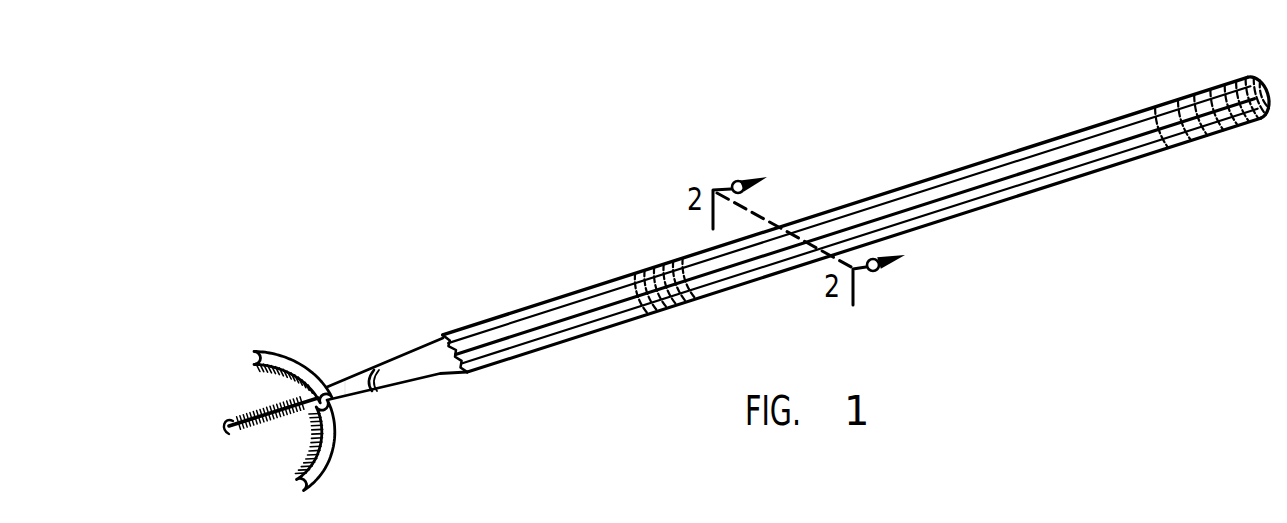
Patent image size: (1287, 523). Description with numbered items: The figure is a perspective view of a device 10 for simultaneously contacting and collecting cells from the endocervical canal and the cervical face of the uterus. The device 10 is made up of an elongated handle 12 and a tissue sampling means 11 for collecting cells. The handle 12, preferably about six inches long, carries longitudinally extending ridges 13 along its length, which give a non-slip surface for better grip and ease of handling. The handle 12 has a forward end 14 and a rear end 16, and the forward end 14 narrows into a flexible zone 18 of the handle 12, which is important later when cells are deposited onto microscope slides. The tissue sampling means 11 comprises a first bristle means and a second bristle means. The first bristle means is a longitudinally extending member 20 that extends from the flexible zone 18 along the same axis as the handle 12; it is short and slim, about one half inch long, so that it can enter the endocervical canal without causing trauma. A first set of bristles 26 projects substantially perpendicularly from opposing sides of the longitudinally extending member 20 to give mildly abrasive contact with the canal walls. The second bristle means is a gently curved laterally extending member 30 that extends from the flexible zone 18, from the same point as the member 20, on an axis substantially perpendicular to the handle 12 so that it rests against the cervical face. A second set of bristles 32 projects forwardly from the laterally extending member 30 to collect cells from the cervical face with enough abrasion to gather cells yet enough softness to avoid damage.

The device 10 is at (903, 158).
The tissue sampling means 11 is at (236, 330).
The elongated handle 12 is at (710, 294).
The longitudinally extending ridges 13 is at (1032, 153).
The forward end 14 is at (467, 370).
The rear end 16 is at (1177, 143).
The flexible zone 18 is at (370, 390).
The longitudinally extending member 20 is at (260, 435).
The first set of bristles 26 is at (233, 418).
The laterally extending member 30 is at (292, 370).
The second set of bristles 32 is at (247, 372).